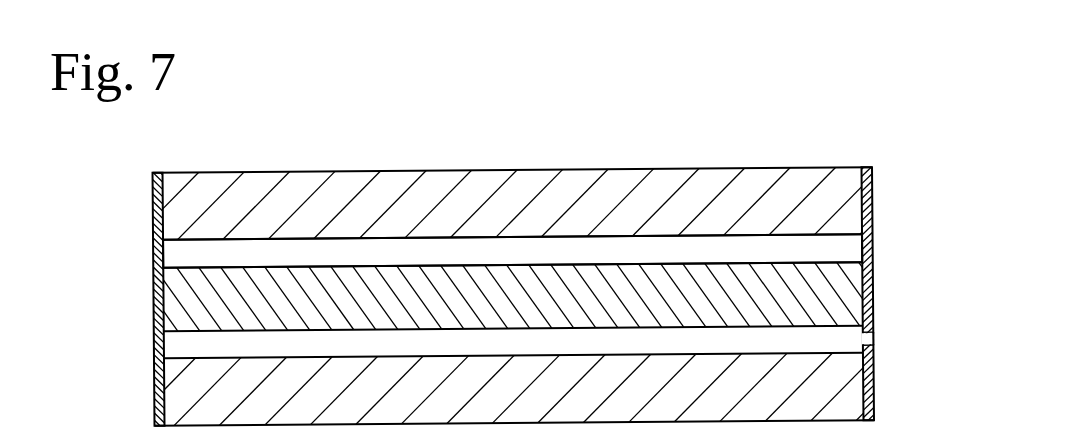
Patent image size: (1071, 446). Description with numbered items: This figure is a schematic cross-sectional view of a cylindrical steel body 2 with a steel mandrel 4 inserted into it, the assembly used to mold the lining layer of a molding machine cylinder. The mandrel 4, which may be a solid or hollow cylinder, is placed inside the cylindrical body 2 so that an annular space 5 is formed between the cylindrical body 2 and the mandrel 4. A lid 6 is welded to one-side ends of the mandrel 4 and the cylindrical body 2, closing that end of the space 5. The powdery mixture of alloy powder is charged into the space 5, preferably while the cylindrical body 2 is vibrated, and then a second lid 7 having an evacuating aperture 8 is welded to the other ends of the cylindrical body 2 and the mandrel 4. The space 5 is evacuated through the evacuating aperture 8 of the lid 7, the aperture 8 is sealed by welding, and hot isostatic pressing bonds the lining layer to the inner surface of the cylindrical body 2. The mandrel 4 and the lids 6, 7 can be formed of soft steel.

The cylindrical body 2 is at (343, 187).
The mandrel 4 is at (612, 280).
The space 5 is at (477, 256).
The lid 6 is at (158, 300).
The lid 7 is at (873, 245).
The evacuating aperture 8 is at (873, 340).